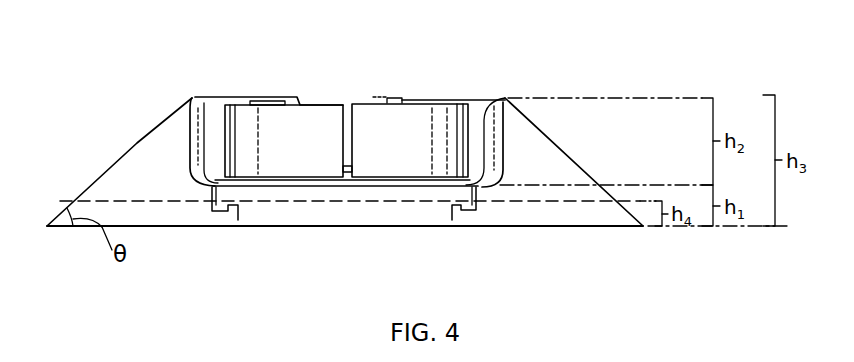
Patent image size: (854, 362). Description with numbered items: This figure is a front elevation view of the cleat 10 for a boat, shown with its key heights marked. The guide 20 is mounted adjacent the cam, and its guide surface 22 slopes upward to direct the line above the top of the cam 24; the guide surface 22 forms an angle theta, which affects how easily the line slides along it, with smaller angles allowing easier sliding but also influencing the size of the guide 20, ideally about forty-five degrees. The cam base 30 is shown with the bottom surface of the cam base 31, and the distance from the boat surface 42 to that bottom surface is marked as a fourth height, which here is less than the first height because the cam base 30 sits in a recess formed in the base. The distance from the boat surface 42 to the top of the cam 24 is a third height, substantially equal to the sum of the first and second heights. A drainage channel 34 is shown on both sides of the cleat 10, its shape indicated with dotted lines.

The cleat 10 is at (170, 79).
The guide 20 is at (157, 167).
The guide surface 22 is at (97, 182).
The top of the cam 24 is at (453, 100).
The cam base 30 is at (360, 193).
The bottom surface of the cam base 31 is at (315, 202).
The drainage channel 34 is at (170, 210).
The boat surface 42 is at (715, 230).